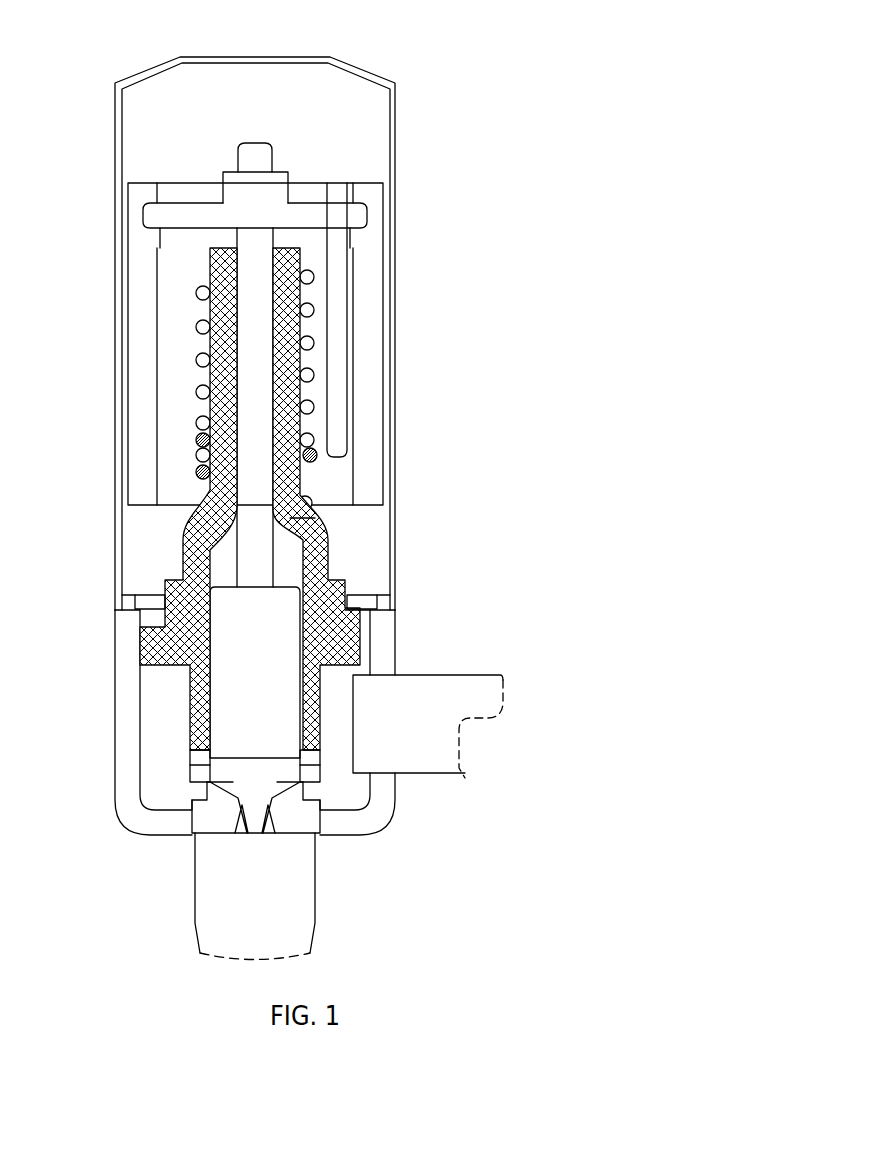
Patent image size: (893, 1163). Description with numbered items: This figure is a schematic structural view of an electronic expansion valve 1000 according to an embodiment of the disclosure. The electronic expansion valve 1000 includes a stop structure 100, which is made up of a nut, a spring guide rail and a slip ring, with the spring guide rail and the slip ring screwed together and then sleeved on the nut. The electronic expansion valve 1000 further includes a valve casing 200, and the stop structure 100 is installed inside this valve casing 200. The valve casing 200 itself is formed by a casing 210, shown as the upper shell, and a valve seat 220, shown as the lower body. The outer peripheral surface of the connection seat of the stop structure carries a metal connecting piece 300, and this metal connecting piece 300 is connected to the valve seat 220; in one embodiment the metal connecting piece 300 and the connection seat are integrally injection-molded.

The electronic expansion valve 1000 is at (482, 78).
The stop structure 100 is at (325, 558).
The valve casing 200 is at (108, 226).
The casing 210 is at (396, 342).
The valve seat 220 is at (128, 757).
The metal connecting piece 300 is at (140, 598).